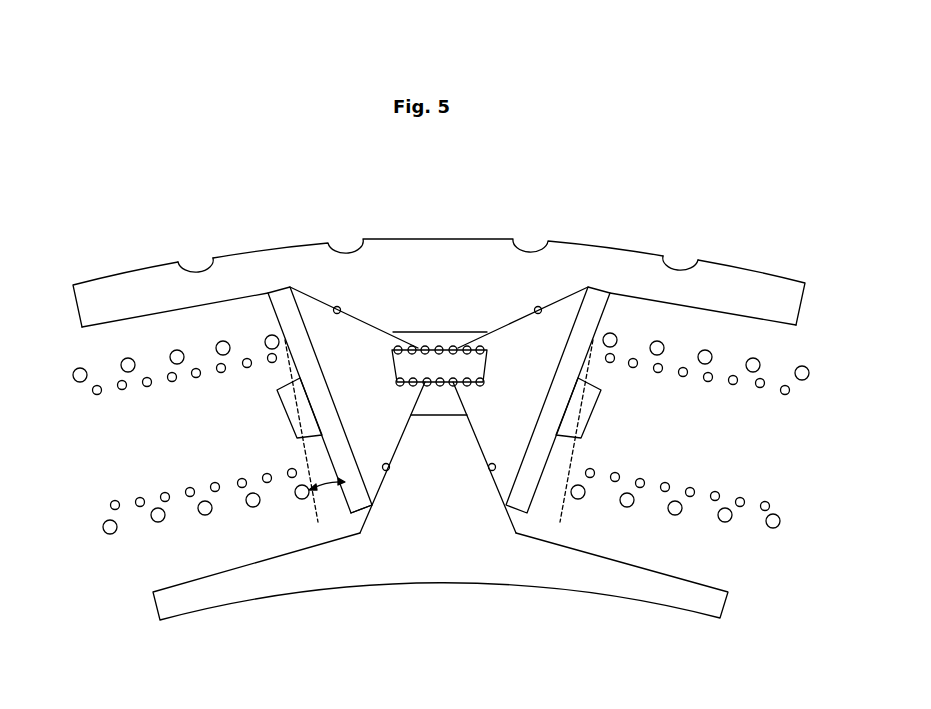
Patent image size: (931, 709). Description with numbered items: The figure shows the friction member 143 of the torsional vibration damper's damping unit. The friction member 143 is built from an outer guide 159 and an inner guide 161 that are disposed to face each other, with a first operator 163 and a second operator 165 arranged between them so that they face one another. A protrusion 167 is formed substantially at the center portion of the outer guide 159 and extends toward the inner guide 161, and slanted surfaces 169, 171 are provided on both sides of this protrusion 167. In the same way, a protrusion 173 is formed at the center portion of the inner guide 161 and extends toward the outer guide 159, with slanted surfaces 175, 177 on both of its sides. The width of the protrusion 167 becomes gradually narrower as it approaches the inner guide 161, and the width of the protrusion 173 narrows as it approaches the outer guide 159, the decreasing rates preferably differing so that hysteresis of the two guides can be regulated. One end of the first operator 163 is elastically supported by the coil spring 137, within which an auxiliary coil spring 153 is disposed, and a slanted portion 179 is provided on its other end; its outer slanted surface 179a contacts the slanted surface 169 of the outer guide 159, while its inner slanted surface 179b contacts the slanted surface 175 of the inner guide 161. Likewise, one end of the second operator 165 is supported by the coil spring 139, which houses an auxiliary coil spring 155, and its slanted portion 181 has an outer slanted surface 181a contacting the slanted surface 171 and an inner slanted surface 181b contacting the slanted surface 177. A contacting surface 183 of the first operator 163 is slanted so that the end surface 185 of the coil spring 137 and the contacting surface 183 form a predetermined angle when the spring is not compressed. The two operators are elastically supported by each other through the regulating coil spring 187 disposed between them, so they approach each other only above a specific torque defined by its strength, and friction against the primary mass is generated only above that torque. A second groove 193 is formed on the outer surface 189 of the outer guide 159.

The friction member 143 is at (607, 196).
The outer guide 159 is at (577, 236).
The second groove 193 is at (195, 265).
The outer surface 189 is at (776, 280).
The first operator 163 is at (306, 298).
The second operator 165 is at (576, 298).
The slanted surface 169 is at (353, 311).
The slanted surface 171 is at (517, 312).
The protrusion 167 is at (458, 301).
The outer slanted surface 179a is at (336, 307).
The outer slanted surface 181a is at (537, 308).
The regulating coil spring 187 is at (422, 347).
The slanted surface 175 is at (386, 473).
The slanted surface 177 is at (492, 473).
The protrusion 173 is at (458, 466).
The inner slanted surface 179b is at (389, 471).
The inner slanted surface 181b is at (490, 471).
The slanted portion 179 is at (380, 393).
The slanted portion 181 is at (533, 393).
The end surface 185 is at (317, 523).
The contacting surface 183 is at (346, 499).
The inner guide 161 is at (261, 597).
The coil spring 137 is at (78, 368).
The auxiliary coil spring 153 is at (94, 395).
The coil spring 139 is at (803, 366).
The auxiliary coil spring 155 is at (788, 396).